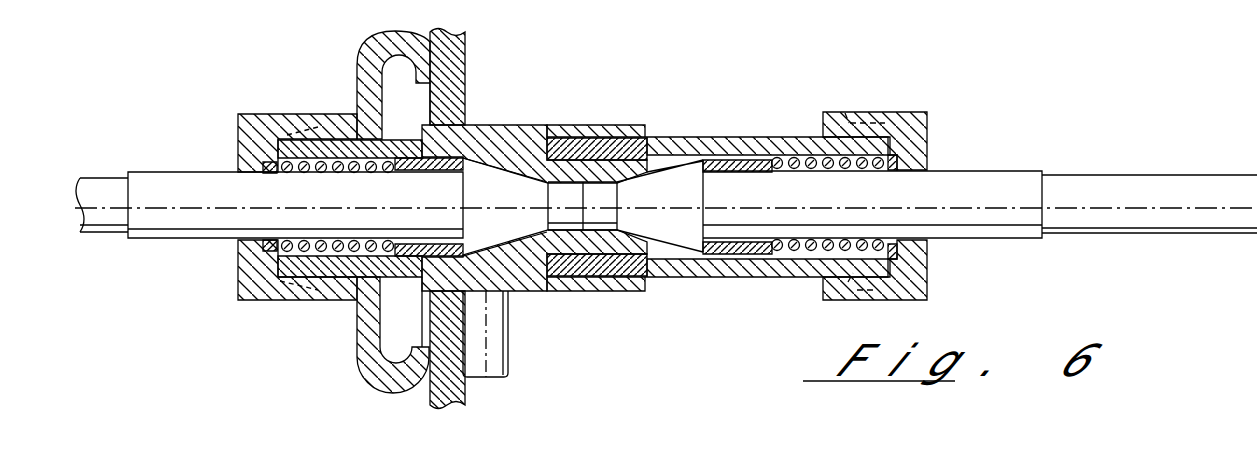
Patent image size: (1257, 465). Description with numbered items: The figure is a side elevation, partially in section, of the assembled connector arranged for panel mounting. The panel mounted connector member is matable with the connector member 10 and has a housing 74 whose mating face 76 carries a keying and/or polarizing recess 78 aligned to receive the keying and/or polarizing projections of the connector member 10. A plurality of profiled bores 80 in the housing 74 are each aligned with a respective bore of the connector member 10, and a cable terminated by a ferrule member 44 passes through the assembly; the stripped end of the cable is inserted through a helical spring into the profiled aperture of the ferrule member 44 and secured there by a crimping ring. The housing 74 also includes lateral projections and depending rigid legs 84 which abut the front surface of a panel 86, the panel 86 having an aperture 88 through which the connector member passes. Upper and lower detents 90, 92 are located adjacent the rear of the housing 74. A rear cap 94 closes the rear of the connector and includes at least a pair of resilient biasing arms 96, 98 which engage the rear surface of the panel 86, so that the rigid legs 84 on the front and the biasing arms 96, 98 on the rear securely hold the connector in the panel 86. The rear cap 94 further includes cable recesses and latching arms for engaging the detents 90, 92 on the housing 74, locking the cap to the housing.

The connector member 10 is at (768, 137).
The ferrule member 44 is at (185, 220).
The housing 74 is at (515, 125).
The mating face 76 is at (646, 128).
The keying and/or polarizing recess 78 is at (556, 142).
The profiled bores 80 is at (338, 150).
The depending rigid legs 84 is at (494, 347).
The panel 86 is at (466, 47).
The aperture 88 is at (447, 116).
The upper detent 90 is at (302, 140).
The lower detent 92 is at (305, 282).
The rear cap 94 is at (240, 123).
The resilient biasing arm 96 is at (372, 54).
The resilient biasing arm 98 is at (373, 380).